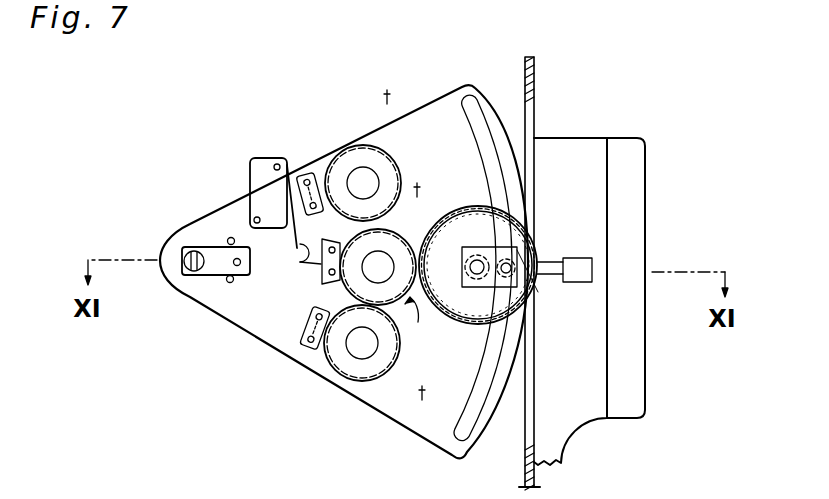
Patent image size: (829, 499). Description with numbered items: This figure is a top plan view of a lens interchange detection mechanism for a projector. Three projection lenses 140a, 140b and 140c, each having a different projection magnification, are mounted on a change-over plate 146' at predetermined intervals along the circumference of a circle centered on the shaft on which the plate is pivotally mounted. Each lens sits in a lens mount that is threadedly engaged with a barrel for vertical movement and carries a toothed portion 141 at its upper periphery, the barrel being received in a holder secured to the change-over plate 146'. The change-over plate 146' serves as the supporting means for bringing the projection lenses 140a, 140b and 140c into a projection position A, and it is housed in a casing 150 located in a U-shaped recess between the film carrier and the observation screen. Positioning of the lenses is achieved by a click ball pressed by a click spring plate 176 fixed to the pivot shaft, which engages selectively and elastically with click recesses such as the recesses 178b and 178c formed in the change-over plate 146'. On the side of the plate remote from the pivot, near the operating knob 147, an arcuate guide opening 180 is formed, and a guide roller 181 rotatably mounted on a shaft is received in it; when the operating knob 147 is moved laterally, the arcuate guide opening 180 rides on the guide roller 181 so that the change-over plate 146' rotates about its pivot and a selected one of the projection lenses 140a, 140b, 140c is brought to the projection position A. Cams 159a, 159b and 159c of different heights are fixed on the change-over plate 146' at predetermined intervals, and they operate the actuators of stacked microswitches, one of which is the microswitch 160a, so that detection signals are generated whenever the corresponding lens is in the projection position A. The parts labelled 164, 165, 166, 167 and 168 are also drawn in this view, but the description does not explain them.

The change-over plate 146' is at (344, 271).
The arcuate guide opening 180 is at (472, 108).
The projection lens 140a is at (374, 268).
The projection lens 140b is at (362, 176).
The projection lens 140c is at (358, 352).
The toothed portion 141 is at (378, 160).
The cam 159a is at (318, 273).
The cam 159b is at (306, 173).
The cam 159c is at (306, 330).
The microswitch 160a is at (266, 166).
The click spring plate 176 is at (185, 243).
The click recess 178b is at (231, 238).
The click recess 178c is at (227, 281).
The wheel 164 is at (495, 215).
The ring 165 is at (457, 210).
The bracket plate 168 is at (477, 267).
The pin 167 is at (483, 246).
The guide roller 181 is at (516, 272).
The lever 166 is at (508, 288).
The operating knob 147 is at (583, 258).
The casing 150 is at (535, 60).
The projection position A is at (414, 324).